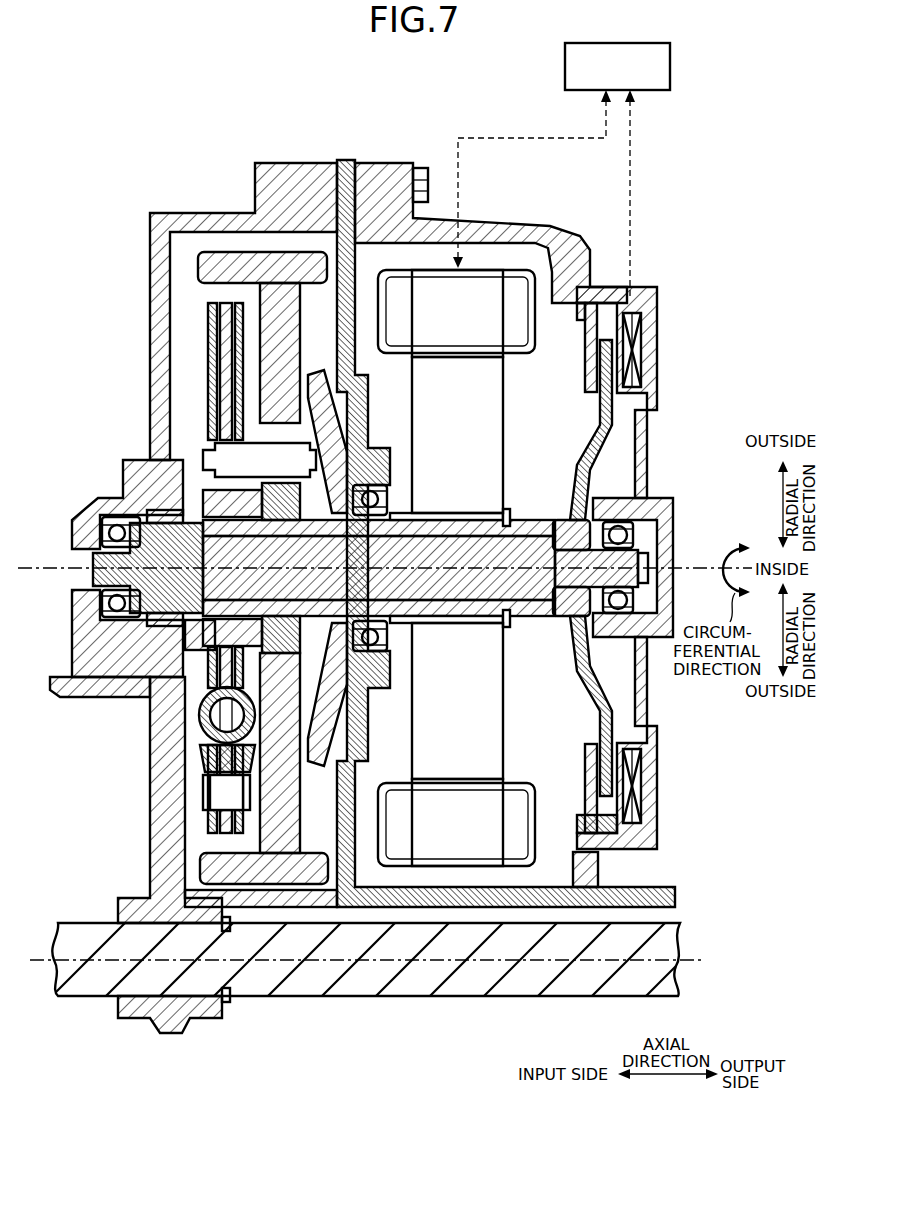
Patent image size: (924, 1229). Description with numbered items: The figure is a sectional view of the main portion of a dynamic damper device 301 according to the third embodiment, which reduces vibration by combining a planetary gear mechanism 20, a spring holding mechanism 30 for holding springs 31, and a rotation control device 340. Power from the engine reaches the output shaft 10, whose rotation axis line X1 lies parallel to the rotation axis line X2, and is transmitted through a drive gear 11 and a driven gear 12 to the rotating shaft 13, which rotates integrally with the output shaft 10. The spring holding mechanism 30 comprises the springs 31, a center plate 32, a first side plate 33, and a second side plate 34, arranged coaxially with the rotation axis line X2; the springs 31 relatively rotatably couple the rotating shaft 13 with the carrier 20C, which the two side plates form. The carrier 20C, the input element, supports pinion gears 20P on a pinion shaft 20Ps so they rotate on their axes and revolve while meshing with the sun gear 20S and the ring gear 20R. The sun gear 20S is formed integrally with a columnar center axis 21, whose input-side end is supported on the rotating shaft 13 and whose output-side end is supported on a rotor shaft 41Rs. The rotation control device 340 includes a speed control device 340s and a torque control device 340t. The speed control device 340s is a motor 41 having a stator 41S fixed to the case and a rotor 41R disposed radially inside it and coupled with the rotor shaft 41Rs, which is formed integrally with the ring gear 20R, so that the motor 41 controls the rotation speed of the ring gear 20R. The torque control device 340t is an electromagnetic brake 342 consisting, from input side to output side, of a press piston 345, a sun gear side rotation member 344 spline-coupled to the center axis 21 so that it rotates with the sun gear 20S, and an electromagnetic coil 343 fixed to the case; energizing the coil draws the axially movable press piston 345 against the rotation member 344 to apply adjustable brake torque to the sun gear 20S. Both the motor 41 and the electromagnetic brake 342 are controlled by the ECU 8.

The dynamic damper device 301 is at (281, 95).
The planetary gear mechanism 20 is at (237, 192).
The ring gear 20R is at (211, 246).
The carrier 20C is at (141, 568).
The first side plate 33 is at (233, 322).
The second side plate 34 is at (210, 350).
The pinion gear 20P is at (281, 412).
The sun gear 20S is at (228, 455).
The pinion shaft 20Ps is at (281, 494).
The driven gear 12 is at (164, 497).
The rotating shaft 13 is at (80, 555).
The center axis 21 is at (205, 643).
The center plate 32 is at (205, 717).
The spring 31 is at (207, 676).
The spring holding mechanism 30 is at (196, 761).
The drive gear 11 is at (144, 838).
The output shaft 10 is at (76, 909).
The ECU 8 is at (672, 66).
The speed control device 340s is at (529, 184).
The motor 41 is at (479, 252).
The stator 41S is at (487, 288).
The rotation control device 340 is at (649, 209).
The torque control device 340t is at (679, 200).
The electromagnetic brake 342 is at (683, 295).
The press piston 345 is at (590, 330).
The electromagnetic coil 343 is at (630, 368).
The sun gear side rotation member 344 is at (610, 433).
The rotor 41R is at (480, 458).
The rotor shaft 41Rs is at (550, 495).
The rotation axis line X2 is at (722, 567).
The rotation axis line X1 is at (708, 958).